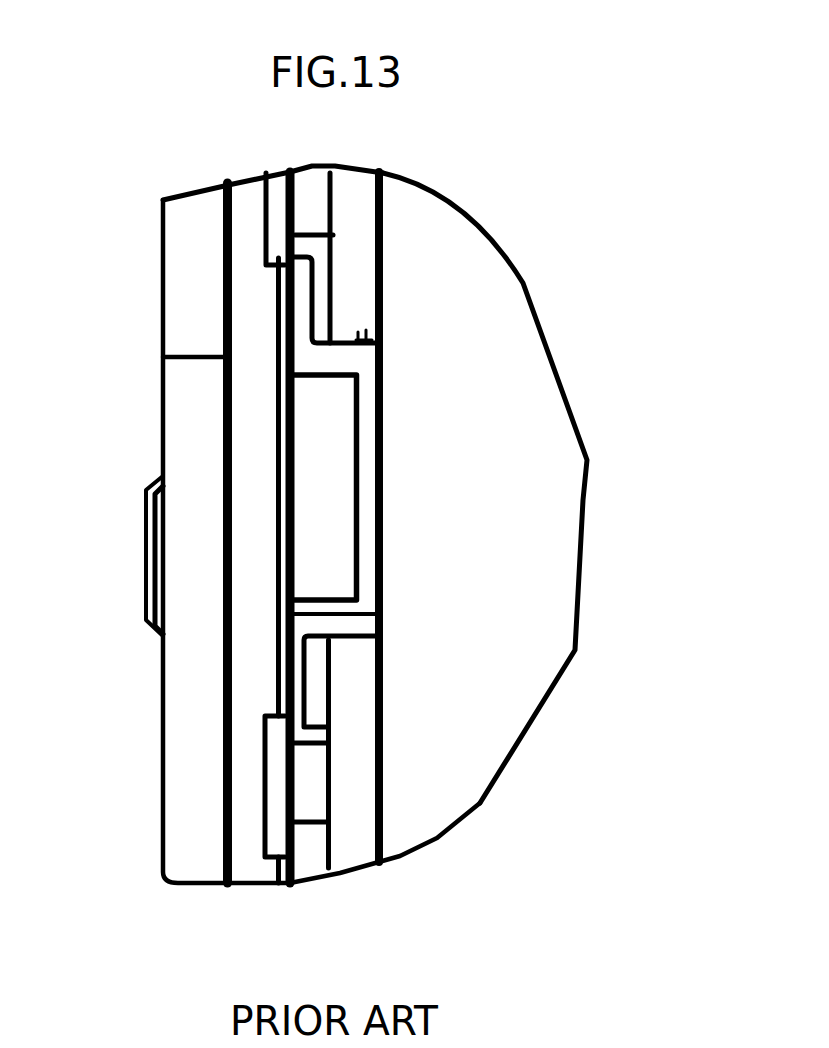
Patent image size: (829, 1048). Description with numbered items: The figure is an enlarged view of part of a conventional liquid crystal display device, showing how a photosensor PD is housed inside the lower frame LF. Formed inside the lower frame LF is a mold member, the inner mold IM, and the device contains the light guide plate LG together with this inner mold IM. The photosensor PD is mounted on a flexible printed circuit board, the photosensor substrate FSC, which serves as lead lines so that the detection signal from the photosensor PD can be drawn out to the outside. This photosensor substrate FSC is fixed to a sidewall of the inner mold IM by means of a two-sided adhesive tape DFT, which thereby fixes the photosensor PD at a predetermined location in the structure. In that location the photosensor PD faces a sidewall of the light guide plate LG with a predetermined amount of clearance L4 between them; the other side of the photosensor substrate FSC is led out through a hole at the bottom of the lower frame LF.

The lower frame LF is at (183, 373).
The mold member (inner mold) IM is at (245, 465).
The two-sided adhesive tape DFT is at (273, 665).
The light guide plate LG is at (512, 370).
The photosensor PD is at (333, 453).
The photosensor substrate (lead lines) FSC is at (370, 613).
The clearance L4 is at (322, 552).